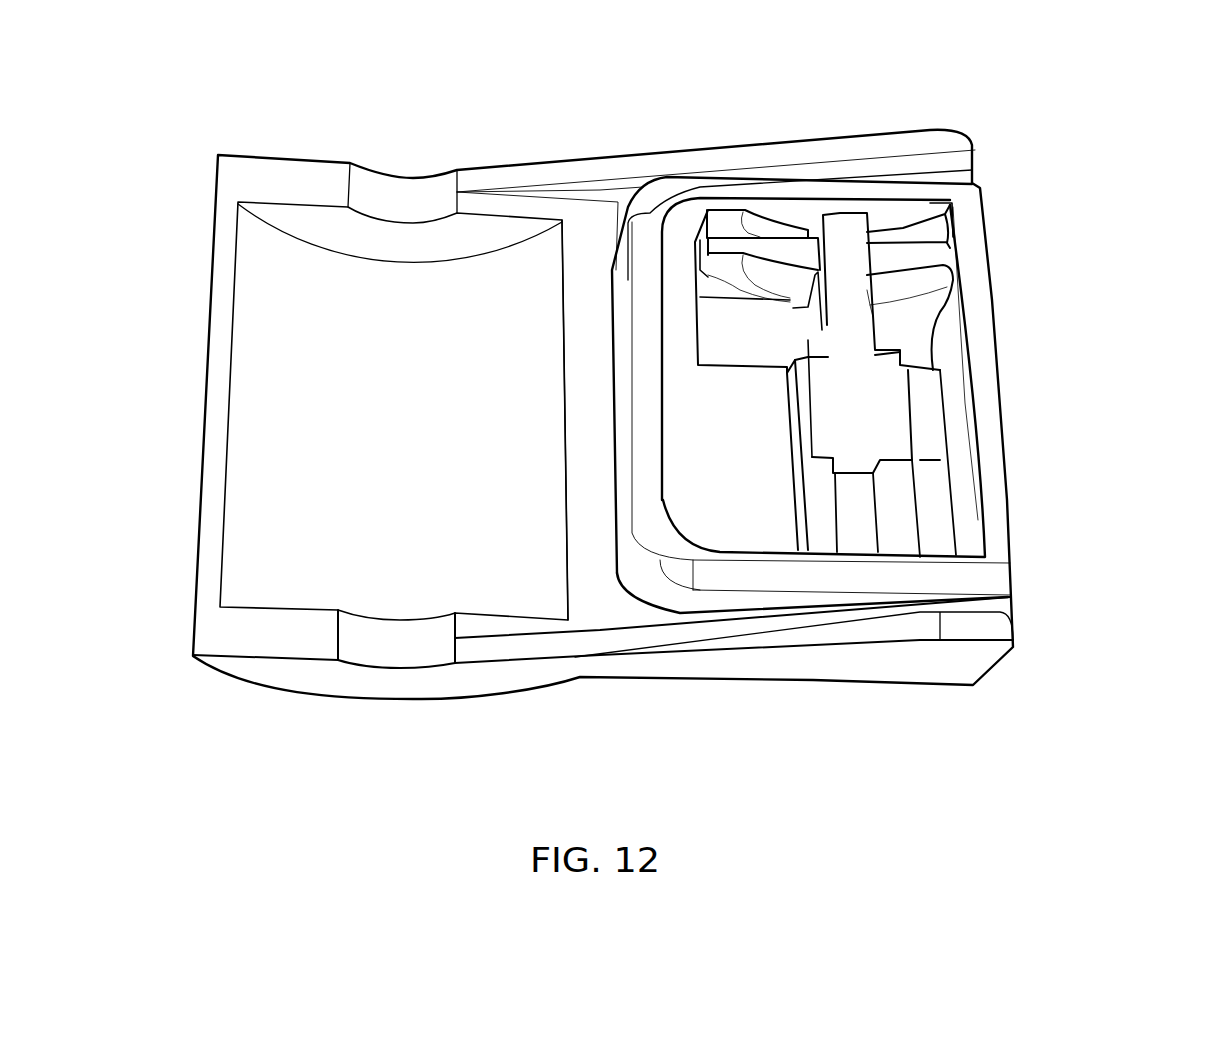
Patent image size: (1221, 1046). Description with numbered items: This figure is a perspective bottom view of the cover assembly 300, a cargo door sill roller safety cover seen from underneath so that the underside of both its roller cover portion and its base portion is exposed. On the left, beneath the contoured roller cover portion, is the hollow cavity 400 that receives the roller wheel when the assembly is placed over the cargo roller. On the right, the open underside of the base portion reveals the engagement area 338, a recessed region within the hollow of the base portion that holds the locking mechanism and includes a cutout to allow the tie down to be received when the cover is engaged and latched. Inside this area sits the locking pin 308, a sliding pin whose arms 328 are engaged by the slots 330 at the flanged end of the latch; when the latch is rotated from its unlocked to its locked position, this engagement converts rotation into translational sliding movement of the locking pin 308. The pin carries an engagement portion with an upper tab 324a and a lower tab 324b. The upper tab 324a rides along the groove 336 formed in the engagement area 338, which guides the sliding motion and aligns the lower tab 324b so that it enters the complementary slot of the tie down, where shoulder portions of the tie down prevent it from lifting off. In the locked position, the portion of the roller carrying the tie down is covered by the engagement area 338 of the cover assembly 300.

The cover assembly 300 is at (1076, 94).
The hollow cavity 400 is at (288, 397).
The arms 328 is at (783, 247).
The slots 330 is at (938, 233).
The locking pin 308 is at (852, 332).
The lower tab 324b is at (890, 437).
The upper tab 324a is at (877, 482).
The groove 336 is at (865, 535).
The engagement area 338 is at (718, 490).